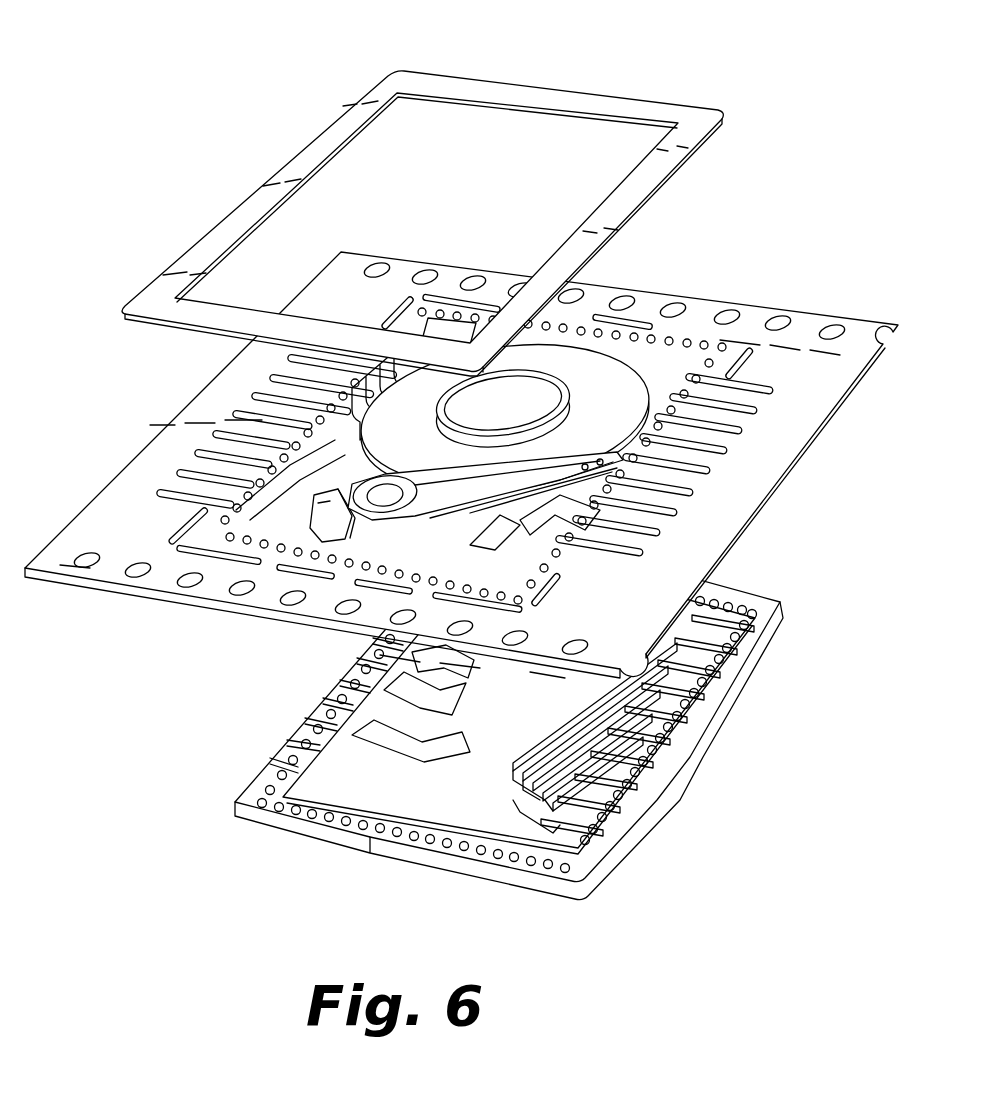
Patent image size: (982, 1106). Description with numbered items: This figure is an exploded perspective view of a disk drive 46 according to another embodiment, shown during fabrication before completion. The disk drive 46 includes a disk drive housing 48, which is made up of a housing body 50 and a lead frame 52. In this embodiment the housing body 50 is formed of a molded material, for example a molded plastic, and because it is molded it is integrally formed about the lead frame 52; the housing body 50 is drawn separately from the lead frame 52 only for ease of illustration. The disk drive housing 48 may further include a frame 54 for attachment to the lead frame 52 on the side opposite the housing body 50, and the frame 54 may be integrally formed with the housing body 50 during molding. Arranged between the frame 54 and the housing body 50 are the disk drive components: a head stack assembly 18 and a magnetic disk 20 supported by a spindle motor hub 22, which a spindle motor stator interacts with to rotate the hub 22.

The disk drive 46 is at (188, 63).
The frame 54 is at (298, 158).
The lead frame 52 is at (340, 622).
The housing body 50 is at (340, 692).
The disk drive housing 48 is at (461, 576).
The magnetic disk 20 is at (618, 416).
The spindle motor hub 22 is at (515, 407).
The head stack assembly 18 is at (300, 493).